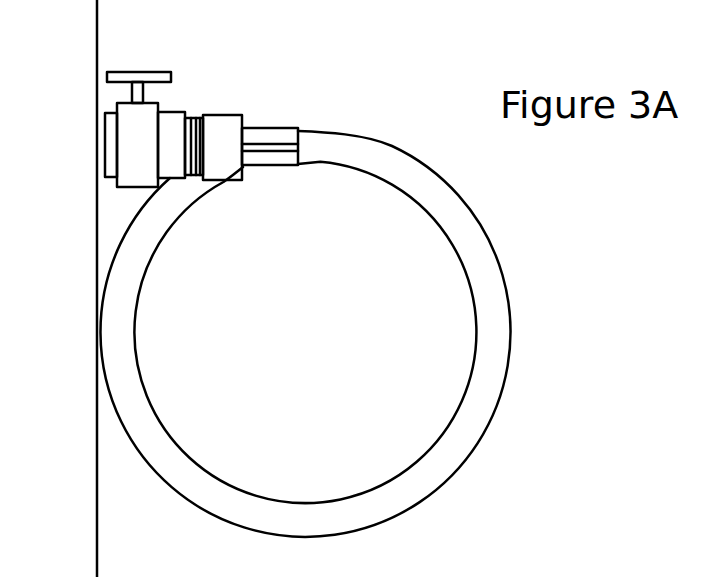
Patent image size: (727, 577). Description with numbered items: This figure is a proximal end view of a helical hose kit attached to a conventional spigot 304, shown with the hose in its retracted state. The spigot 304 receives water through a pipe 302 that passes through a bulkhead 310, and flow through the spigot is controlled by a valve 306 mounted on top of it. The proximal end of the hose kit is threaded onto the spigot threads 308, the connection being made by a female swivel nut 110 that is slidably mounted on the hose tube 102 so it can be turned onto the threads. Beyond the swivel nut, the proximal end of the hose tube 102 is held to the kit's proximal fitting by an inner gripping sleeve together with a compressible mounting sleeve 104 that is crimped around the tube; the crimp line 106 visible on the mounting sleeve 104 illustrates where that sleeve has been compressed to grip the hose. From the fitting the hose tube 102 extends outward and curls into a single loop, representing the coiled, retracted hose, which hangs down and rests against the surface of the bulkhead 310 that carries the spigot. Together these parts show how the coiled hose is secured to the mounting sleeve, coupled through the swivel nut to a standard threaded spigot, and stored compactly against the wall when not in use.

The hose tube 102 is at (160, 440).
The compressible mounting sleeve 104 is at (287, 162).
The crimp line 106 is at (253, 145).
The female swivel nut 110 is at (222, 163).
The pipe 302 is at (98, 192).
The spigot 304 is at (137, 165).
The valve 306 is at (127, 72).
The spigot threads 308 is at (191, 113).
The bulkhead 310 is at (97, 510).